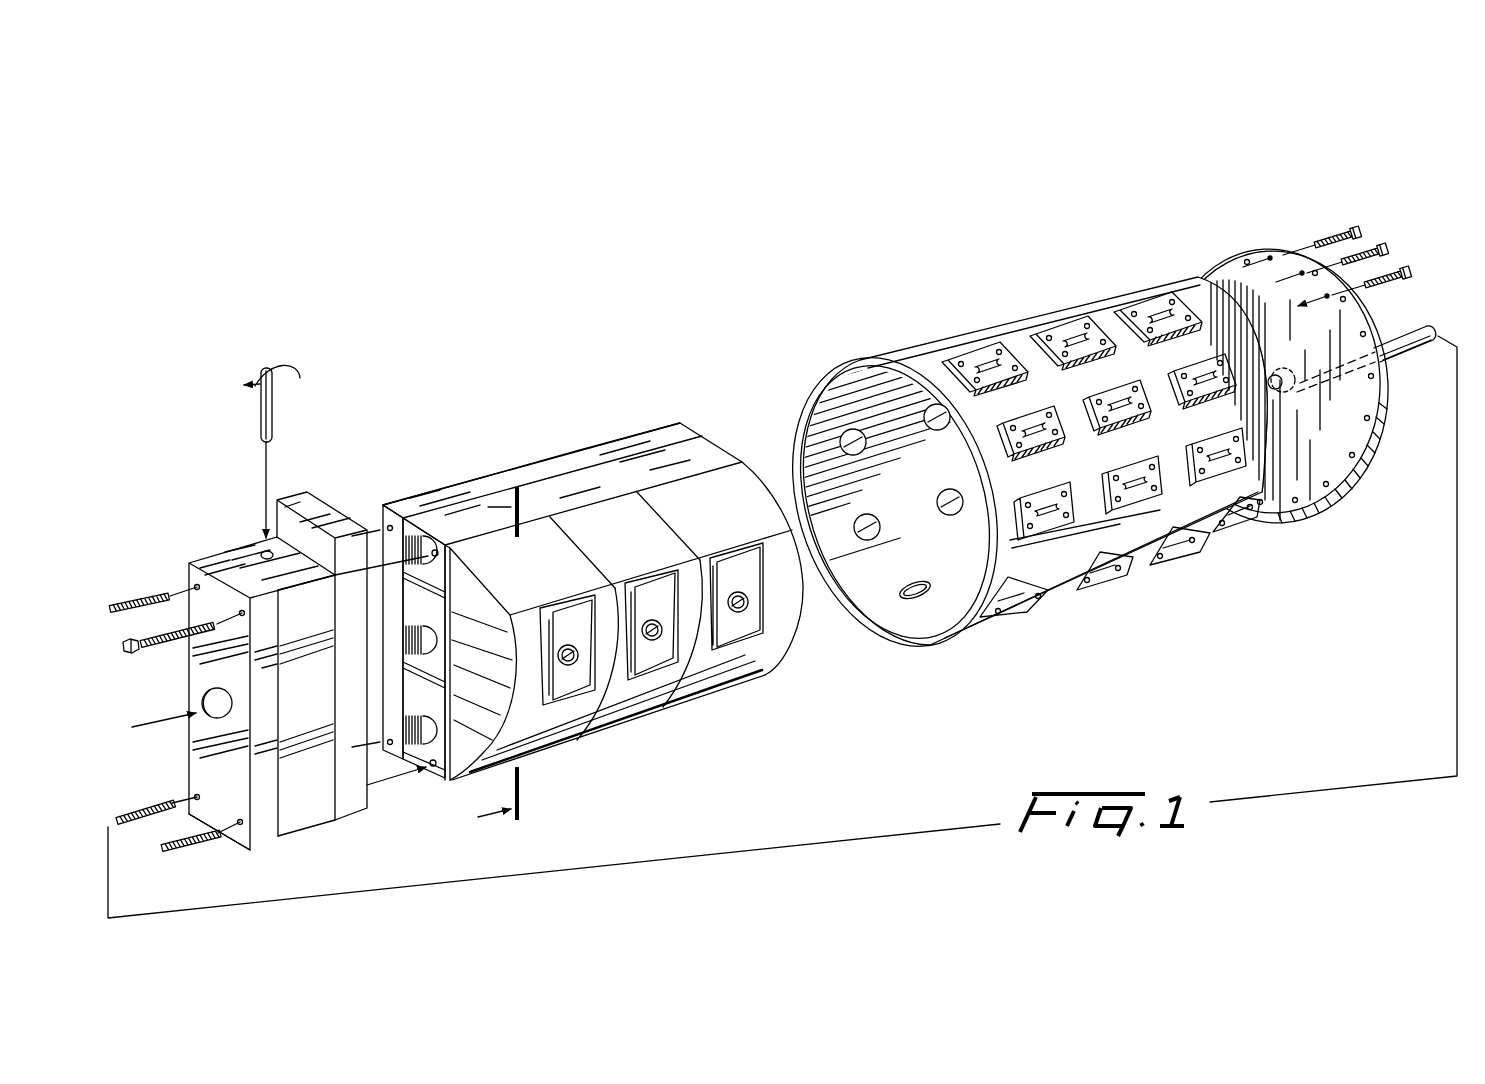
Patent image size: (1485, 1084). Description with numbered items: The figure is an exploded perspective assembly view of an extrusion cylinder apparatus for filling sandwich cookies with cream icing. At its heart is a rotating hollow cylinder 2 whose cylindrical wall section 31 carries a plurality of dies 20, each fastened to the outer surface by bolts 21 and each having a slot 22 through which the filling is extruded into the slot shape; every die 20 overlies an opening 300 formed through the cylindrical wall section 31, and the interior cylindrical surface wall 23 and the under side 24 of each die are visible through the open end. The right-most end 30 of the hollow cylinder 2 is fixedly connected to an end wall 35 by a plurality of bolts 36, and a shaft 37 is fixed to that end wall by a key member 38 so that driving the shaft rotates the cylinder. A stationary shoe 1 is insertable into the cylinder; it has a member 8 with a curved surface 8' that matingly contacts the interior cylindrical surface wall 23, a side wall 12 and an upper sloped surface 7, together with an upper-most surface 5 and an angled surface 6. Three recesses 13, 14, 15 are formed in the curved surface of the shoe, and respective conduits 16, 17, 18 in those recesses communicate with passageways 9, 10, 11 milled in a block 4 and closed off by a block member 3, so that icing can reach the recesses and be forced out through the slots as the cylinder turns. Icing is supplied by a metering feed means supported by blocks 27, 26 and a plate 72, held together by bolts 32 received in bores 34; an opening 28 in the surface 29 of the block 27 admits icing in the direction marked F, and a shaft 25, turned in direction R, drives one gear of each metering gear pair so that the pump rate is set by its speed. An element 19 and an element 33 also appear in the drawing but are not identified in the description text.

The housing 1 is at (540, 458).
The cylindrical drum 2 is at (985, 325).
The end plate 3 is at (385, 518).
The screw recess 4 is at (410, 532).
The top wall section 5 is at (593, 452).
The top wall section 6 is at (632, 477).
The top wall section 7 is at (682, 493).
The curved wall 8 is at (799, 590).
The lower curved wall 8' is at (608, 717).
The hole 9 is at (420, 548).
The recess 10 is at (420, 660).
The recess 11 is at (408, 745).
The end face 12 is at (470, 745).
The window 13 is at (573, 683).
The window 14 is at (648, 657).
The window 15 is at (742, 630).
The bearing 16 is at (568, 645).
The bearing 17 is at (652, 620).
The bearing 18 is at (738, 592).
The end cap 19 is at (1205, 310).
The plate 20 is at (1147, 315).
The plate hole 21 is at (1137, 315).
The slot 22 is at (877, 523).
The drum end face 23 is at (815, 465).
The hole slash 24 is at (880, 528).
The pin 25 is at (260, 412).
The block part 26 is at (297, 639).
The block part 27 is at (252, 639).
The bore 28 is at (212, 690).
The block part 29 is at (203, 760).
The hub 30 is at (1233, 327).
The drum rim 31 is at (820, 390).
The bolt 32 is at (160, 640).
The cap rim 33 is at (1338, 487).
The bolt hole 34 is at (242, 613).
The shaft 35 is at (1362, 320).
The bolt 36 is at (1405, 275).
The rod 37 is at (1418, 352).
The hidden bore 38 is at (1284, 368).
The plate block 72 is at (347, 552).
The hole 300 is at (860, 540).